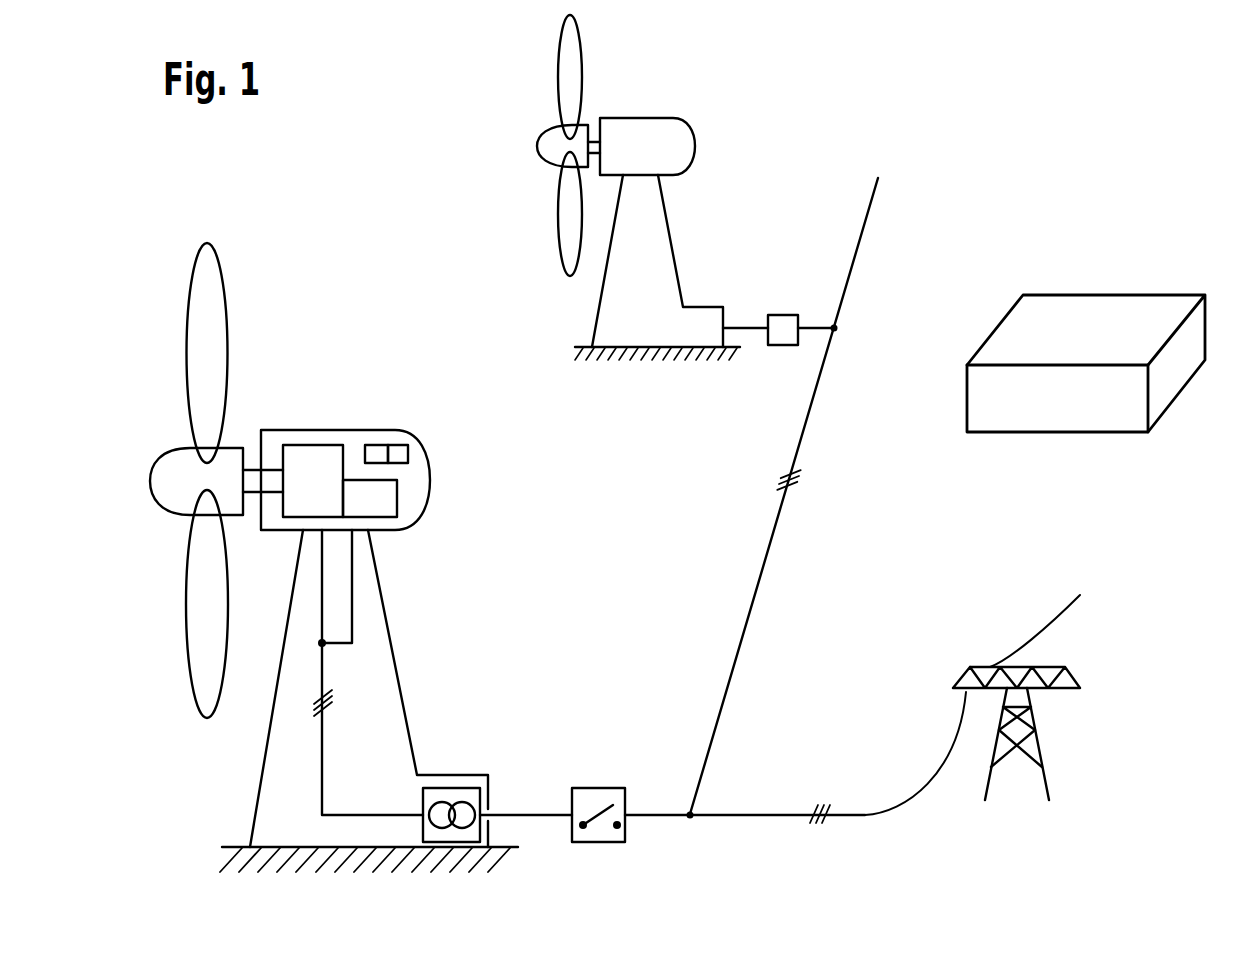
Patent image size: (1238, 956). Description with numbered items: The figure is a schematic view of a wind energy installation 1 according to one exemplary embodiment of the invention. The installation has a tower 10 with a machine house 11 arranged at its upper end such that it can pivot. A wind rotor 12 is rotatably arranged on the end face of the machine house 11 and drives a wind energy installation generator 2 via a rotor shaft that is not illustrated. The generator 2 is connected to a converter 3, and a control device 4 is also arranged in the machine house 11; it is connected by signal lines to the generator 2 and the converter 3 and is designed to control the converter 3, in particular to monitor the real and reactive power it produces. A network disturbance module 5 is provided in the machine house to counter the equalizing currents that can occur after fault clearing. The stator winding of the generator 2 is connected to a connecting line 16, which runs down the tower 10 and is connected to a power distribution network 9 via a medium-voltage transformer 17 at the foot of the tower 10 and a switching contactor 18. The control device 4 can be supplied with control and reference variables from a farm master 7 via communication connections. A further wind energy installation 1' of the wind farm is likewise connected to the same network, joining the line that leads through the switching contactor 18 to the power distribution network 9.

The wind energy installation 1 is at (334, 557).
The further wind energy installation 1' is at (687, 187).
The wind energy installation generator 2 is at (314, 455).
The converter 3 is at (386, 498).
The control device 4 is at (377, 455).
The network disturbance module 5 is at (405, 450).
The farm master 7 is at (978, 400).
The power distribution network 9 is at (1102, 652).
The tower 10 is at (263, 765).
The machine house 11 is at (272, 440).
The wind rotor 12 is at (208, 298).
The connecting line 16 is at (323, 720).
The medium-voltage transformer 17 is at (471, 788).
The switching contactor 18 is at (598, 788).